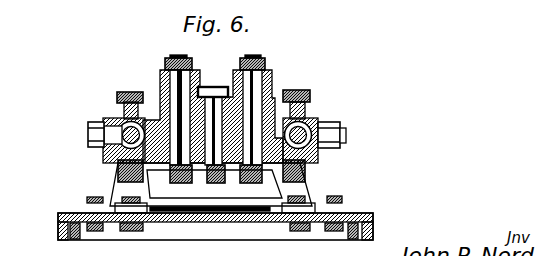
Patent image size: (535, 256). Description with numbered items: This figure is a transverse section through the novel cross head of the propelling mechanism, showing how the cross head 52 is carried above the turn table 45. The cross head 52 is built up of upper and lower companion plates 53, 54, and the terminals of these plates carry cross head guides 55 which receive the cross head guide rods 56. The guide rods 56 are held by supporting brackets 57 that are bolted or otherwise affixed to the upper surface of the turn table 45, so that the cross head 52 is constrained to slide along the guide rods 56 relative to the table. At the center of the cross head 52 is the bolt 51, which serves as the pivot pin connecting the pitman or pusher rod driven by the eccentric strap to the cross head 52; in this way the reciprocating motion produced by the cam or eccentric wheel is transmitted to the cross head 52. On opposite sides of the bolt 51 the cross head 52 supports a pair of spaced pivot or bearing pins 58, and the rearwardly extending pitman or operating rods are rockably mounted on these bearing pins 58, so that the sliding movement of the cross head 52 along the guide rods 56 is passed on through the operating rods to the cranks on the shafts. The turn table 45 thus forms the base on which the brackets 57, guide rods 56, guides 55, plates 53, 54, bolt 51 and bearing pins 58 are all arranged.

The turn table 45 is at (378, 215).
The bolt 51 is at (222, 95).
The cross head 52 is at (277, 97).
The upper companion plate 53 is at (158, 105).
The lower companion plate 54 is at (143, 163).
The cross head guides 55 is at (315, 120).
The cross head guide rods 56 is at (341, 137).
The supporting brackets 57 is at (310, 187).
The bearing pins 58 is at (192, 78).